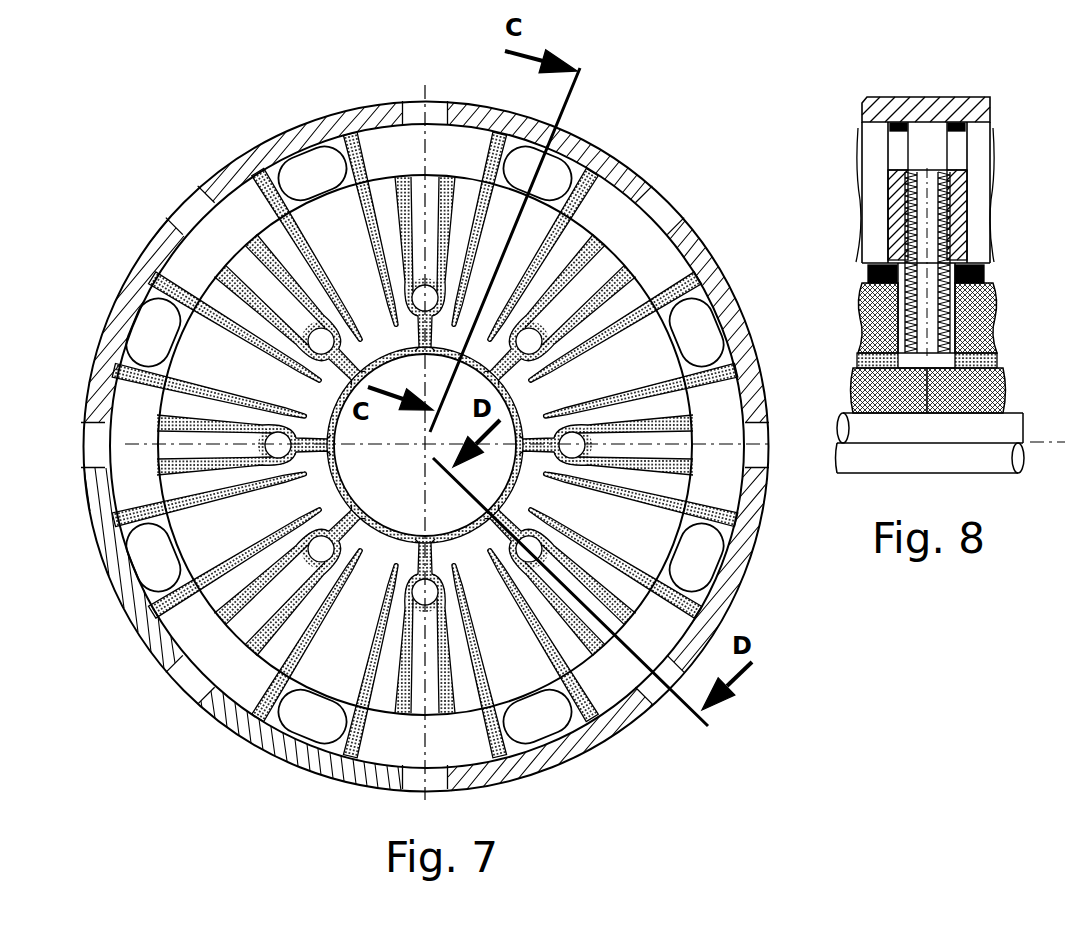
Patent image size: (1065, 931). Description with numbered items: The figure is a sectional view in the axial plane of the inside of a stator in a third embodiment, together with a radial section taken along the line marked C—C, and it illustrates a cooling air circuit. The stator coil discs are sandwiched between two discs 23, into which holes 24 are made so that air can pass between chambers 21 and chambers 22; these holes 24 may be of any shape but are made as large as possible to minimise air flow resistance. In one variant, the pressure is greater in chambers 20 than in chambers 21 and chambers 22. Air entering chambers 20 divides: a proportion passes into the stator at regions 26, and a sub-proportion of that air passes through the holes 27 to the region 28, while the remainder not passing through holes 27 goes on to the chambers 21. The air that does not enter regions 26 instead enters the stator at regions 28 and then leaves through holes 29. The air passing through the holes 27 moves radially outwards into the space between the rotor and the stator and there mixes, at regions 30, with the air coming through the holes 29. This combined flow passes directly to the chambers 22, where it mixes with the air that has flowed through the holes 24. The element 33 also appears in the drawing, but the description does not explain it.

In FIG. 7, the chambers 20 is at (603, 203).
In FIG. 7, the chambers 21 is at (573, 168).
In FIG. 8, the chambers 21 is at (930, 148).
In FIG. 8, the chambers 22 is at (877, 153).
In FIG. 8, the discs 23 is at (895, 229).
In FIG. 7, the holes 24 is at (743, 330).
In FIG. 7, the regions 26 is at (645, 290).
In FIG. 7, the holes 27 is at (740, 490).
In FIG. 8, the region 28 is at (926, 268).
In FIG. 7, the holes 29 is at (717, 435).
In FIG. 8, the regions 30 is at (1064, 318).
In FIG. 7, the diagonal spoke 33 is at (627, 260).